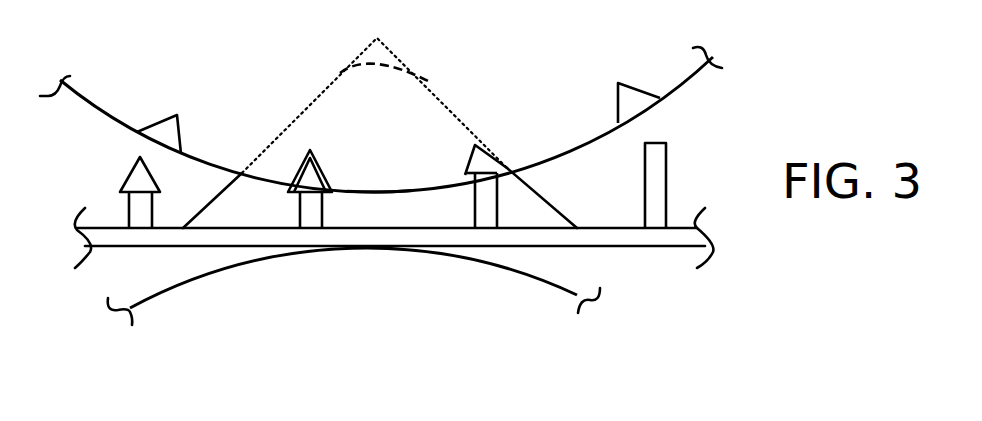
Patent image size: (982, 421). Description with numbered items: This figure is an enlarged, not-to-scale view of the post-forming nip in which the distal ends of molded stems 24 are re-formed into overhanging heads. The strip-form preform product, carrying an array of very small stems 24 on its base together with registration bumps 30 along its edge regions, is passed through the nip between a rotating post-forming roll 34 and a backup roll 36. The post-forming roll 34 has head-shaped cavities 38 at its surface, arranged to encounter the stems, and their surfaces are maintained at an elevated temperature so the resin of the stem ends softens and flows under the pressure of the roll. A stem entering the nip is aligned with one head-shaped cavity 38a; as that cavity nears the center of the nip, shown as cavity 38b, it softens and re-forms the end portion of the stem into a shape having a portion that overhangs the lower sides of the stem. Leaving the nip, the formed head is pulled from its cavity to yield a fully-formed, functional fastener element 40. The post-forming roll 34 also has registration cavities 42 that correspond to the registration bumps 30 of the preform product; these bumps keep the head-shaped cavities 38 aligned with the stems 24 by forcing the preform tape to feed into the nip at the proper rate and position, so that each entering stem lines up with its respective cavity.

The stems 24 is at (667, 162).
The registration bumps 30 is at (214, 194).
The post-forming roll 34 is at (252, 87).
The backup roll 36 is at (490, 328).
The head-shaped cavities 38 is at (178, 128).
The head-shaped cavity 38a is at (618, 83).
The head-shaped cavity 38b is at (468, 164).
The fastener element 40 is at (122, 176).
The registration cavities 42 is at (376, 176).